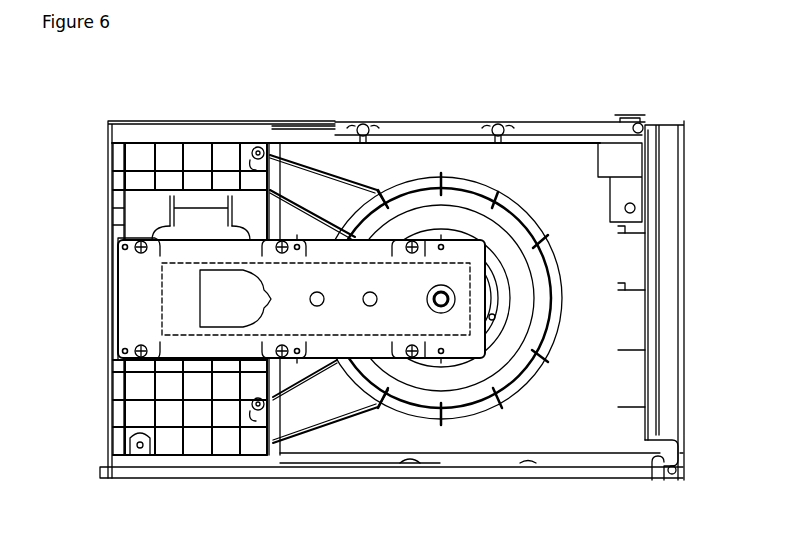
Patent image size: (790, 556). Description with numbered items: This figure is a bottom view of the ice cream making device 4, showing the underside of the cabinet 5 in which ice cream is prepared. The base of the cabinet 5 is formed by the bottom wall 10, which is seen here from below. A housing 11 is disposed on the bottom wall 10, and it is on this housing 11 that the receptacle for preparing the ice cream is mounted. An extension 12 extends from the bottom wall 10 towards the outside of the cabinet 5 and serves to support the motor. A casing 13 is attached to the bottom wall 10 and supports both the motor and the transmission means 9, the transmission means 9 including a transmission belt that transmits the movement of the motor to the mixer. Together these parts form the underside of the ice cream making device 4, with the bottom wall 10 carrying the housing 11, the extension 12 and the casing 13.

The ice cream making device 4 is at (330, 100).
The cabinet 5 is at (460, 122).
The transmission means 9 is at (160, 296).
The bottom wall 10 is at (605, 253).
The housing 11 is at (507, 348).
The extension 12 is at (134, 115).
The casing 13 is at (355, 355).